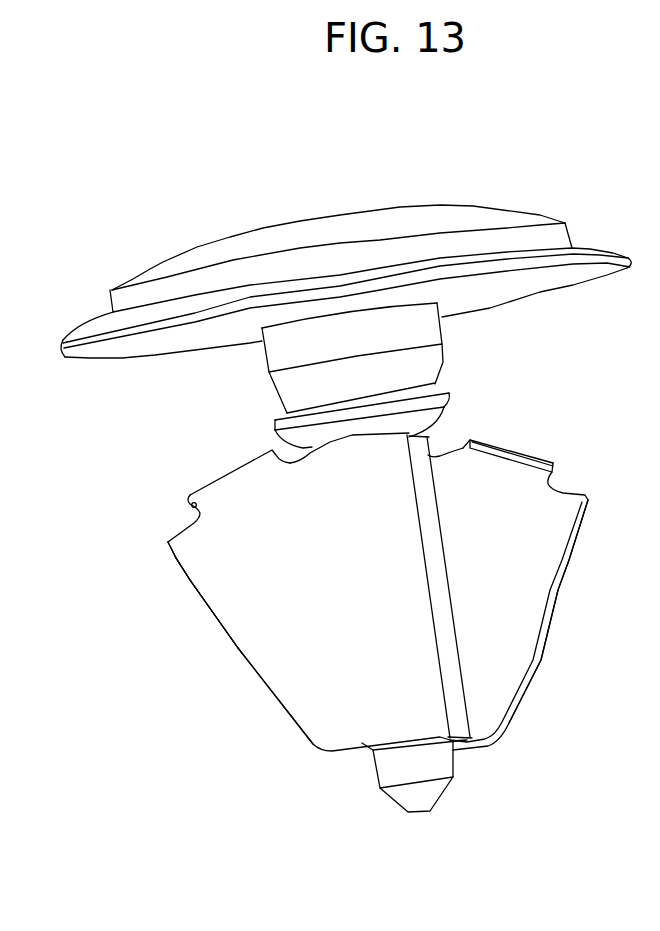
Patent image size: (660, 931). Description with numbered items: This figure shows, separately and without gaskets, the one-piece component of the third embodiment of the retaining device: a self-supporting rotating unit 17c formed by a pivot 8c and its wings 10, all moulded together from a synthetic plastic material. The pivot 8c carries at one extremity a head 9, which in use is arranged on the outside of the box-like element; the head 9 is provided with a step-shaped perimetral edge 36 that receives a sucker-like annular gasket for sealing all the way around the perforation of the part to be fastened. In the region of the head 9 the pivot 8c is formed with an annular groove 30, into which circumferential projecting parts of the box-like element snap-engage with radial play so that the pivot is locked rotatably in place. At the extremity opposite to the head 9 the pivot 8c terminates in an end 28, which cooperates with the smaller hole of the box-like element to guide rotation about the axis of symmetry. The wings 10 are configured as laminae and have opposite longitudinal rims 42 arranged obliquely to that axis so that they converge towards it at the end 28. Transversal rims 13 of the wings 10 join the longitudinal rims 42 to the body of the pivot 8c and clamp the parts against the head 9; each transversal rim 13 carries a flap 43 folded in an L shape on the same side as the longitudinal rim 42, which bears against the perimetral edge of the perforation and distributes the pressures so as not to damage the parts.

The head 9 is at (330, 248).
The step-shaped perimetral edge 36 is at (586, 241).
The annular groove 30 is at (441, 387).
The wings 10 is at (280, 656).
The longitudinal rims 42 is at (226, 648).
The flap 43 is at (220, 478).
The transversal rims 13 is at (175, 507).
The self-supporting rotating unit 17c is at (158, 603).
The pivot 8c is at (433, 763).
The end 28 is at (397, 793).